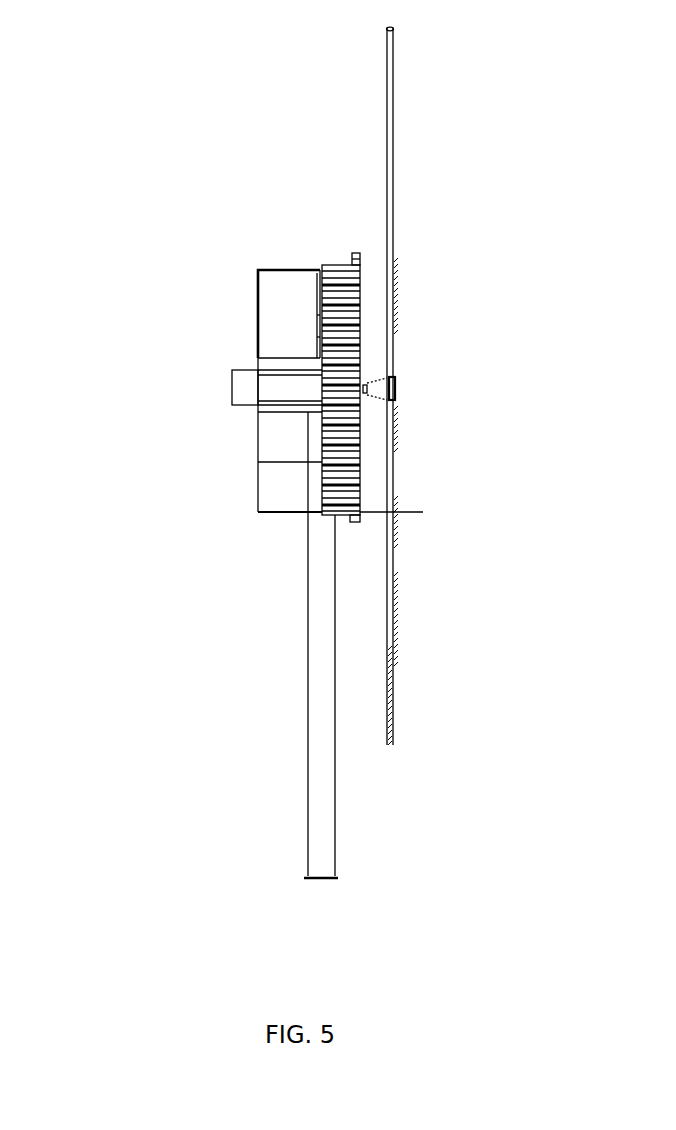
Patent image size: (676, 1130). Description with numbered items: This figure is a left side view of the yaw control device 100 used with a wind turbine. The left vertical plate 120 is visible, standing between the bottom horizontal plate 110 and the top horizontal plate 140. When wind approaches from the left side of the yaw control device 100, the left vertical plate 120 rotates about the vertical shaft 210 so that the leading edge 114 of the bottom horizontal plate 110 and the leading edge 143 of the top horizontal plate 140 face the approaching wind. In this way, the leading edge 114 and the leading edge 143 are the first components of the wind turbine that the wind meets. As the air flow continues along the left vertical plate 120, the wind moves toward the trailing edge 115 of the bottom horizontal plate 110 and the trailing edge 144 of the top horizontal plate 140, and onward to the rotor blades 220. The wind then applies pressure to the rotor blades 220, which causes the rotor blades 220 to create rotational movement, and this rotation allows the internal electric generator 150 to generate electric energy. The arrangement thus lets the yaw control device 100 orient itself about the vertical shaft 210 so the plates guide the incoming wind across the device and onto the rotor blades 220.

The yaw control device 100 is at (67, 118).
The bottom horizontal plate 110 is at (297, 512).
The leading edge 114 is at (263, 512).
The trailing edge 115 is at (423, 512).
The left vertical plate 120 is at (320, 295).
The top horizontal plate 140 is at (333, 270).
The leading edge 143 is at (267, 270).
The trailing edge 144 is at (395, 273).
The electric generator 150 is at (230, 387).
The vertical shaft 210 is at (308, 798).
The rotor blades 220 is at (393, 135).